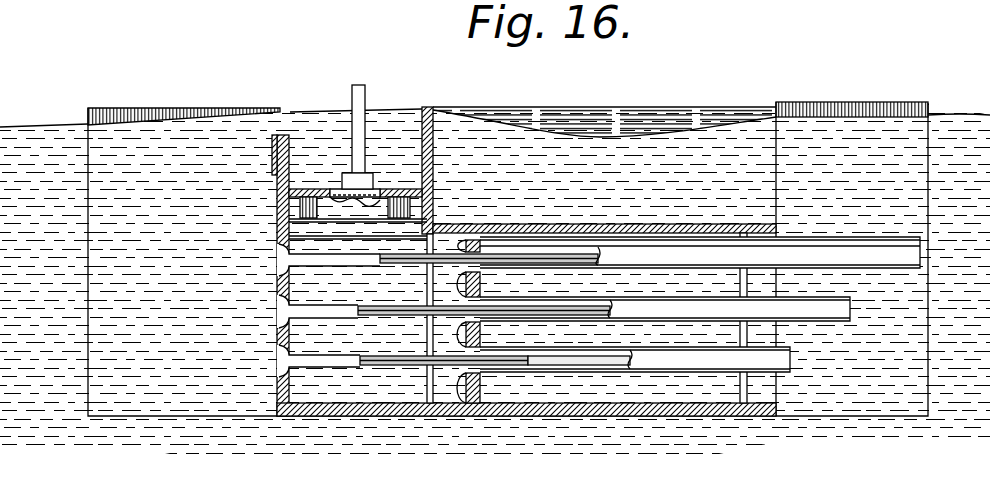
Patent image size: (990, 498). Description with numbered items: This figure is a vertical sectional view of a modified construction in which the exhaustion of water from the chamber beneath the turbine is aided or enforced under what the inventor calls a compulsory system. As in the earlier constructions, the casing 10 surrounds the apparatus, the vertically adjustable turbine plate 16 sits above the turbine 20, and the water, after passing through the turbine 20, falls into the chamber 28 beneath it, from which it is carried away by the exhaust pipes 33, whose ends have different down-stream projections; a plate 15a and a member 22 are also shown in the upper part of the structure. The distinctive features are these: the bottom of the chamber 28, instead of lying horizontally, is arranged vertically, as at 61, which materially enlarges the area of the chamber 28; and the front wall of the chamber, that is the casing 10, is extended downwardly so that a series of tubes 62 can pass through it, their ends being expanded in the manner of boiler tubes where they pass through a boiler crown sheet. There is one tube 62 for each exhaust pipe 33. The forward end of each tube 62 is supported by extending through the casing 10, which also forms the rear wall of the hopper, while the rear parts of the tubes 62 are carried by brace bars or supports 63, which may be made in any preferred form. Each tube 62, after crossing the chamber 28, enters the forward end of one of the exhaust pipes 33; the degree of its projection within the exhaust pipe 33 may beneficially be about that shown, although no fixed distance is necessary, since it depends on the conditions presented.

The casing 10 is at (493, 223).
The plate 15a is at (272, 163).
The vertically adjustable turbine plate 16 is at (392, 189).
The turbine 20 is at (323, 197).
The vertical pipe 22 is at (357, 87).
The chamber beneath the turbine 28 is at (358, 308).
The exhaust pipes 33 is at (822, 305).
The vertical bottom of the chamber 61 is at (480, 277).
The tubes 62 is at (410, 257).
The brace bars or supports 63 is at (430, 389).